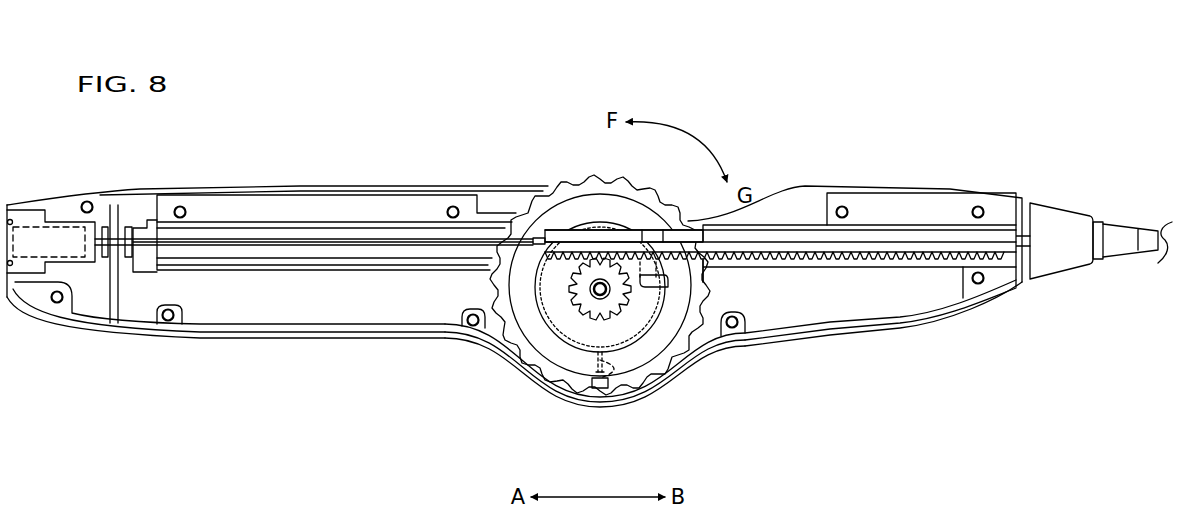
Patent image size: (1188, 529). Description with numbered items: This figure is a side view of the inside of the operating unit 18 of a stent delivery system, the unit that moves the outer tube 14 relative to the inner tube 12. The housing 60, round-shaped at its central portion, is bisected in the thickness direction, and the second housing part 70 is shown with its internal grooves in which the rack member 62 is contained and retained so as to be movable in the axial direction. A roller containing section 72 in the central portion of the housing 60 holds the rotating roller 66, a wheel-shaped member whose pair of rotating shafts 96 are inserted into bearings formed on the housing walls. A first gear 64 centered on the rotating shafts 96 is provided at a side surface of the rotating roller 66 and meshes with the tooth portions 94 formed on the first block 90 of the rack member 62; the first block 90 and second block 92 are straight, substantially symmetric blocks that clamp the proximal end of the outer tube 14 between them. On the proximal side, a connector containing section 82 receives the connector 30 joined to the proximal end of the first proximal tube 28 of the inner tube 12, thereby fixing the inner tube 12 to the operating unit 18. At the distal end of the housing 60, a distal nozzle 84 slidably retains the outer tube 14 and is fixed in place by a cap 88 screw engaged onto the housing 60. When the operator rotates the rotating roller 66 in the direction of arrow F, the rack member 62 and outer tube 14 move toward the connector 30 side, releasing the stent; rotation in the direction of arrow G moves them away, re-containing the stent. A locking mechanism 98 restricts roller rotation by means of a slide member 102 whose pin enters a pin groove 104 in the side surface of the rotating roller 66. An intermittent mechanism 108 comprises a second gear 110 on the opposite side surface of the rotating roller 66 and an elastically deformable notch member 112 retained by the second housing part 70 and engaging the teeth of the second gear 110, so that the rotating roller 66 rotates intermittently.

The inner tube 12 is at (292, 237).
The outer tube 14 is at (535, 235).
The operating unit 18 is at (1001, 184).
The first proximal tube 28 is at (263, 252).
The connector 30 is at (20, 240).
The housing 60 is at (833, 340).
The rack member 62 is at (797, 227).
The first gear 64 is at (585, 305).
The rotating roller 66 is at (606, 205).
The second housing part 70 is at (226, 212).
The roller containing section 72 is at (580, 392).
The connector containing section 82 is at (63, 243).
The distal nozzle 84 is at (1146, 238).
The cap 88 is at (1059, 253).
The first block 90 is at (879, 250).
The second block 92 is at (936, 232).
The tooth portions 94 is at (832, 258).
The rotating shafts 96 is at (594, 282).
The locking mechanism 98 is at (674, 310).
The slide member 102 is at (662, 298).
The pin groove 104 is at (651, 275).
The intermittent mechanism 108 is at (546, 334).
The second gear 110 is at (532, 283).
The notch member 112 is at (630, 387).